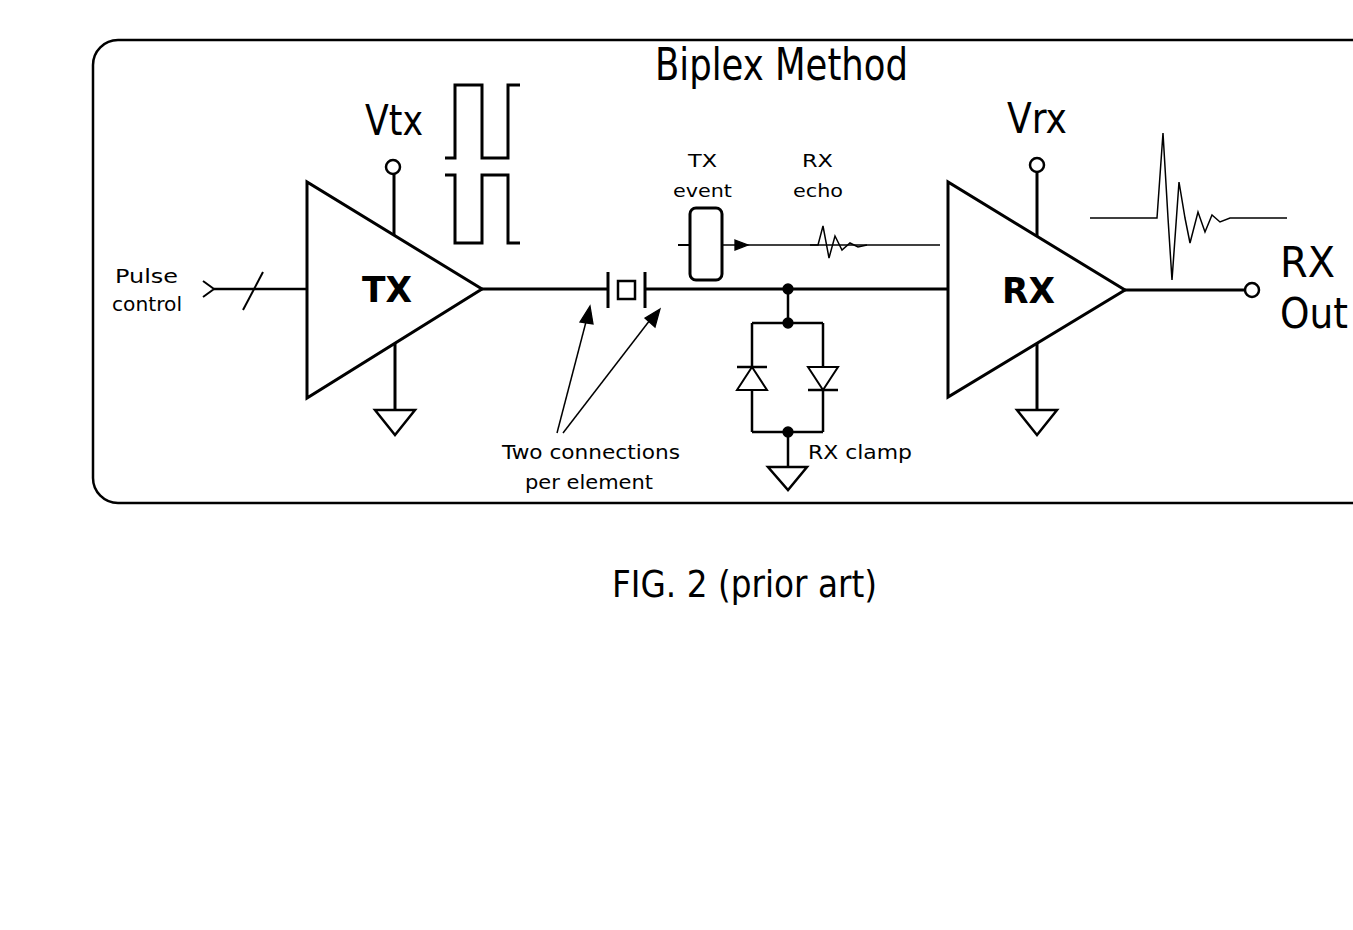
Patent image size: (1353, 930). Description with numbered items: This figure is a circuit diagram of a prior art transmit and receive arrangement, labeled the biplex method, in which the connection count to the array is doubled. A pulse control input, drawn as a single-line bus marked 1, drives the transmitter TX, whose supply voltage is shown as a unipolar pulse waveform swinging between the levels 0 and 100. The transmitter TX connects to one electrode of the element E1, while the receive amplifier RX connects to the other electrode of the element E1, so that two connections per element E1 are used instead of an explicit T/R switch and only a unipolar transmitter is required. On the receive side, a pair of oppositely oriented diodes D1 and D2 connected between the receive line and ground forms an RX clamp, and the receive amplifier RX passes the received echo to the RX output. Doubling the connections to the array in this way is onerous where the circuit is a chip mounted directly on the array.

The element E1 is at (608, 323).
The clamp diode D1 is at (717, 377).
The clamp diode D2 is at (857, 377).
The pulse control signal line 1 is at (250, 289).
The transmit voltage level 100 is at (496, 131).
The zero voltage level 0 is at (485, 198).